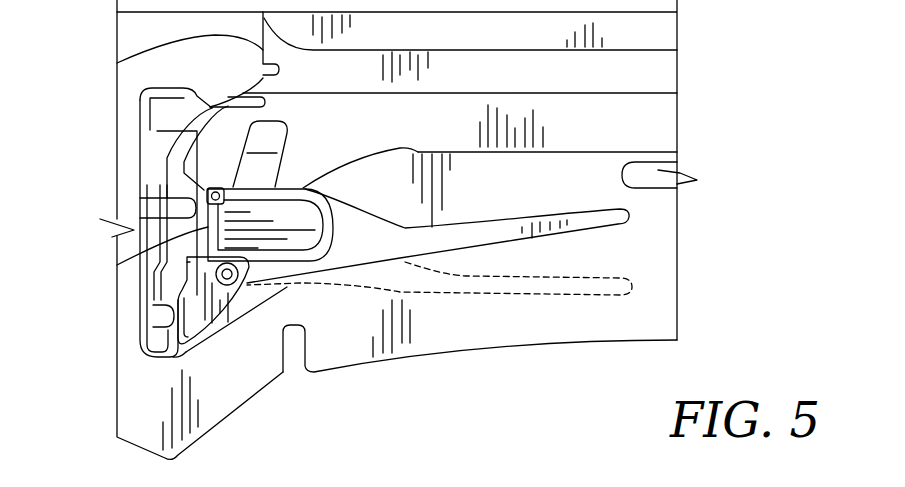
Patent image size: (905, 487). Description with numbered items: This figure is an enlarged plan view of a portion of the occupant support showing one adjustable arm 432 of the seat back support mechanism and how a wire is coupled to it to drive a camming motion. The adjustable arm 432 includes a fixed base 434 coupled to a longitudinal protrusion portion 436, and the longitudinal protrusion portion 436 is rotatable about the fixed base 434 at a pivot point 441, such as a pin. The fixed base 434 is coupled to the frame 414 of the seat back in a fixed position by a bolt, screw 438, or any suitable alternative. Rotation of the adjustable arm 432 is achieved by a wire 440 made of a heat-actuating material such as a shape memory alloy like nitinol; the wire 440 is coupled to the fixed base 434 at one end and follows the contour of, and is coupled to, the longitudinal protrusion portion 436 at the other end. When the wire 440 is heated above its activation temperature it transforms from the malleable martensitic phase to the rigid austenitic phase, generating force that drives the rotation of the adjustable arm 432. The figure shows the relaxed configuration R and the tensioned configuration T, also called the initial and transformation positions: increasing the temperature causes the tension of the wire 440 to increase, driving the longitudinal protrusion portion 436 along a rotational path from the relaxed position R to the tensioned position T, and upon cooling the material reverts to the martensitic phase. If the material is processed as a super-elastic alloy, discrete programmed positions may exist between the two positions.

The frame 414 is at (167, 353).
The adjustable arm 432 is at (362, 383).
The fixed base 434 is at (198, 340).
The longitudinal protrusion portion 436 is at (629, 216).
The screw 438 is at (167, 322).
The wire 440 is at (117, 265).
The pivot point 441 is at (224, 302).
The relaxed configuration R is at (488, 196).
The tensioned configuration T is at (601, 320).